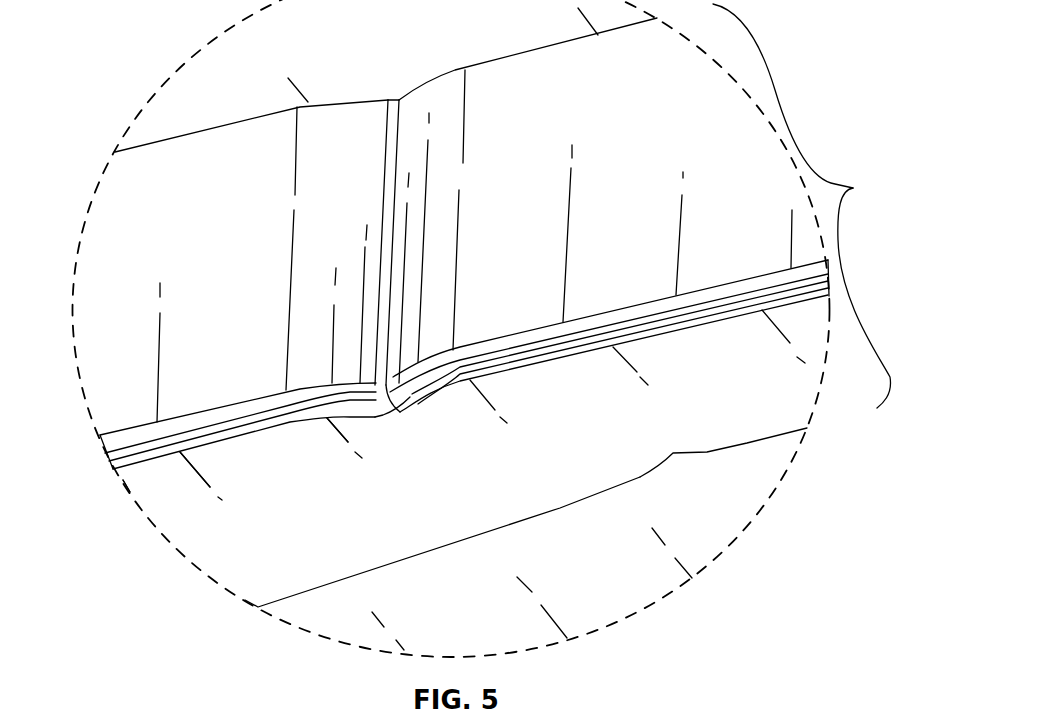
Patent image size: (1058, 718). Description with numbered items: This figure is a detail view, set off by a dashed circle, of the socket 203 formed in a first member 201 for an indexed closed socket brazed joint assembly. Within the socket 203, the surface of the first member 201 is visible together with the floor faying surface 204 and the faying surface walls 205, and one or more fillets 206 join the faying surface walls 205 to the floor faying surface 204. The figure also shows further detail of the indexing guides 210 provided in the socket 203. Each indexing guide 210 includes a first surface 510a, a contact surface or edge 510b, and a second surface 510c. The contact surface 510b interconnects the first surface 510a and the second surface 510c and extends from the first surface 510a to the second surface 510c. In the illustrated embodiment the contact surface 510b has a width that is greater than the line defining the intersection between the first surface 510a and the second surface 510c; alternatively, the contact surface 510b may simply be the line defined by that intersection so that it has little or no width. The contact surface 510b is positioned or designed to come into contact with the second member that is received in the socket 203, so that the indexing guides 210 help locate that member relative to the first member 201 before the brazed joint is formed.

The first member 201 is at (326, 620).
The socket 203 is at (853, 188).
The floor faying surface 204 is at (186, 538).
The faying surface walls 205 is at (93, 270).
The fillet 206 is at (108, 457).
The indexing guide 210 is at (668, 462).
The first surface 510a is at (332, 127).
The contact surface 510b is at (408, 85).
The second surface 510c is at (447, 100).